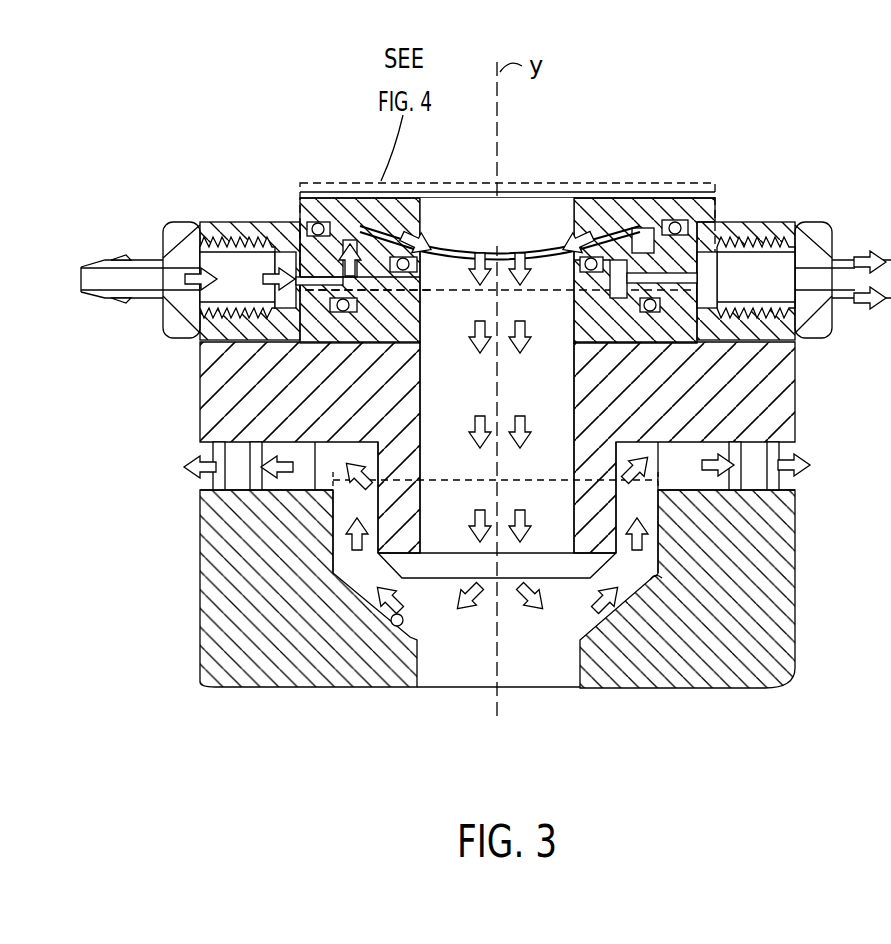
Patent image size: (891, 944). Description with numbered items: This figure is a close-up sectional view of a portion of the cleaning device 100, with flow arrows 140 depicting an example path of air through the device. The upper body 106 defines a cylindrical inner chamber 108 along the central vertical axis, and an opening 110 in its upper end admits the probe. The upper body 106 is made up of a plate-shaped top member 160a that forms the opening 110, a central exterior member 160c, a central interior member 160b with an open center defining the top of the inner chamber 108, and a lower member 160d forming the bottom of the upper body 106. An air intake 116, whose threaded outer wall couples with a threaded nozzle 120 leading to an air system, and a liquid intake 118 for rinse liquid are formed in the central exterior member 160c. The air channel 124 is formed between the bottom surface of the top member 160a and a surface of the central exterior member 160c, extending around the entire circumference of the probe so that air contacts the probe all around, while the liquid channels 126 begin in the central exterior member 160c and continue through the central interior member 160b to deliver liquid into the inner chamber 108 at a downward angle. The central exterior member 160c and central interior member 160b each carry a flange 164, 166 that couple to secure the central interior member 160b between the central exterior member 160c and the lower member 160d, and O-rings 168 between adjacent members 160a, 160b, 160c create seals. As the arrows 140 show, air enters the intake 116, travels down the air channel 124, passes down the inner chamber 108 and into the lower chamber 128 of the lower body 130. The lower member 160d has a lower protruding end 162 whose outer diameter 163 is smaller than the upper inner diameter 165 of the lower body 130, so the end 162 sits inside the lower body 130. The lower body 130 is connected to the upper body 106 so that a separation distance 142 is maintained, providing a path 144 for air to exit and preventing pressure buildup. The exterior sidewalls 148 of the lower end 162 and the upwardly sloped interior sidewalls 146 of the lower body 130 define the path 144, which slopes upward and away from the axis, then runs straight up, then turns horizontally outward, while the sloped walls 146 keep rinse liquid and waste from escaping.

The cleaning device 100 is at (196, 159).
The upper body 106 is at (786, 374).
The inner chamber 108 is at (440, 405).
The opening 110 is at (480, 187).
The air intake 116 is at (242, 224).
The liquid intake 118 is at (767, 236).
The threaded nozzle 120 is at (118, 260).
The air channel 124 is at (543, 240).
The liquid channel 126 is at (430, 290).
The lower chamber 128 is at (556, 667).
The lower body 130 is at (208, 602).
The flow arrows 140 is at (522, 252).
The separation distance 142 is at (337, 452).
The path 144 is at (342, 516).
The interior sidewalls 146 is at (654, 578).
The exterior sidewalls 148 is at (393, 578).
The top member 160a is at (621, 200).
The central interior member 160b is at (335, 362).
The central exterior member 160c is at (790, 330).
The lower member 160d is at (736, 428).
The lower protruding end 162 is at (378, 497).
The outer diameter 163 is at (417, 622).
The flange 164 is at (680, 288).
The upper inner diameter 165 is at (563, 480).
The flange 166 is at (360, 300).
The O-rings 168 is at (320, 223).